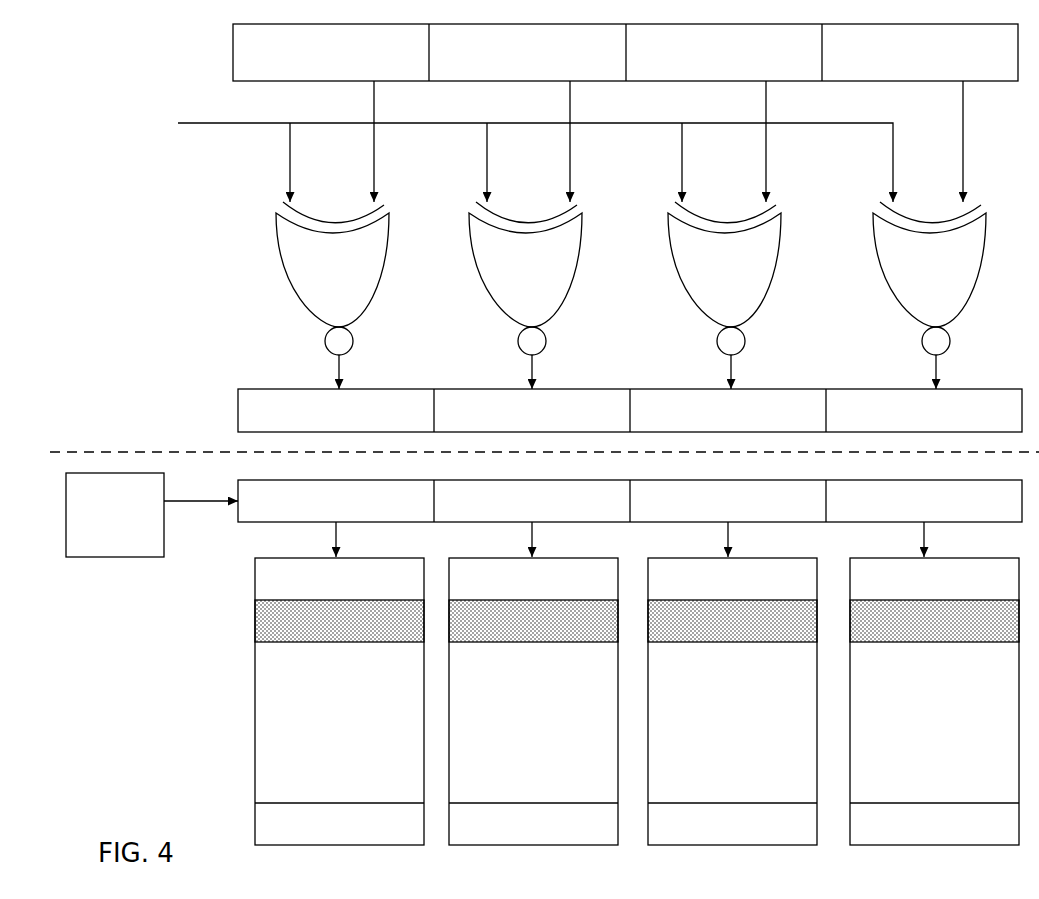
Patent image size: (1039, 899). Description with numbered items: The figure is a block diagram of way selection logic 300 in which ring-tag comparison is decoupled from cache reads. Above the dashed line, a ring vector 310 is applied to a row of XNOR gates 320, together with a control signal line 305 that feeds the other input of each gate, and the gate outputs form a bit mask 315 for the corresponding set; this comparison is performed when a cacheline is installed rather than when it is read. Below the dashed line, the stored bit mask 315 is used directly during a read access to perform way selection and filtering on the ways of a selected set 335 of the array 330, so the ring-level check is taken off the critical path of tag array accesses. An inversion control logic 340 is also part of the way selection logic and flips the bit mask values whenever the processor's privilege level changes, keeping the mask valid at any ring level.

The way selection logic 300 is at (73, 74).
The inversion control signal line 305 is at (519, 158).
The ring vector 310 is at (233, 53).
The bit mask 315 is at (238, 408).
The XNOR gates 320 is at (203, 187).
The array 330 is at (205, 560).
The selected set 335 is at (255, 620).
The inversion control logic 340 is at (129, 551).